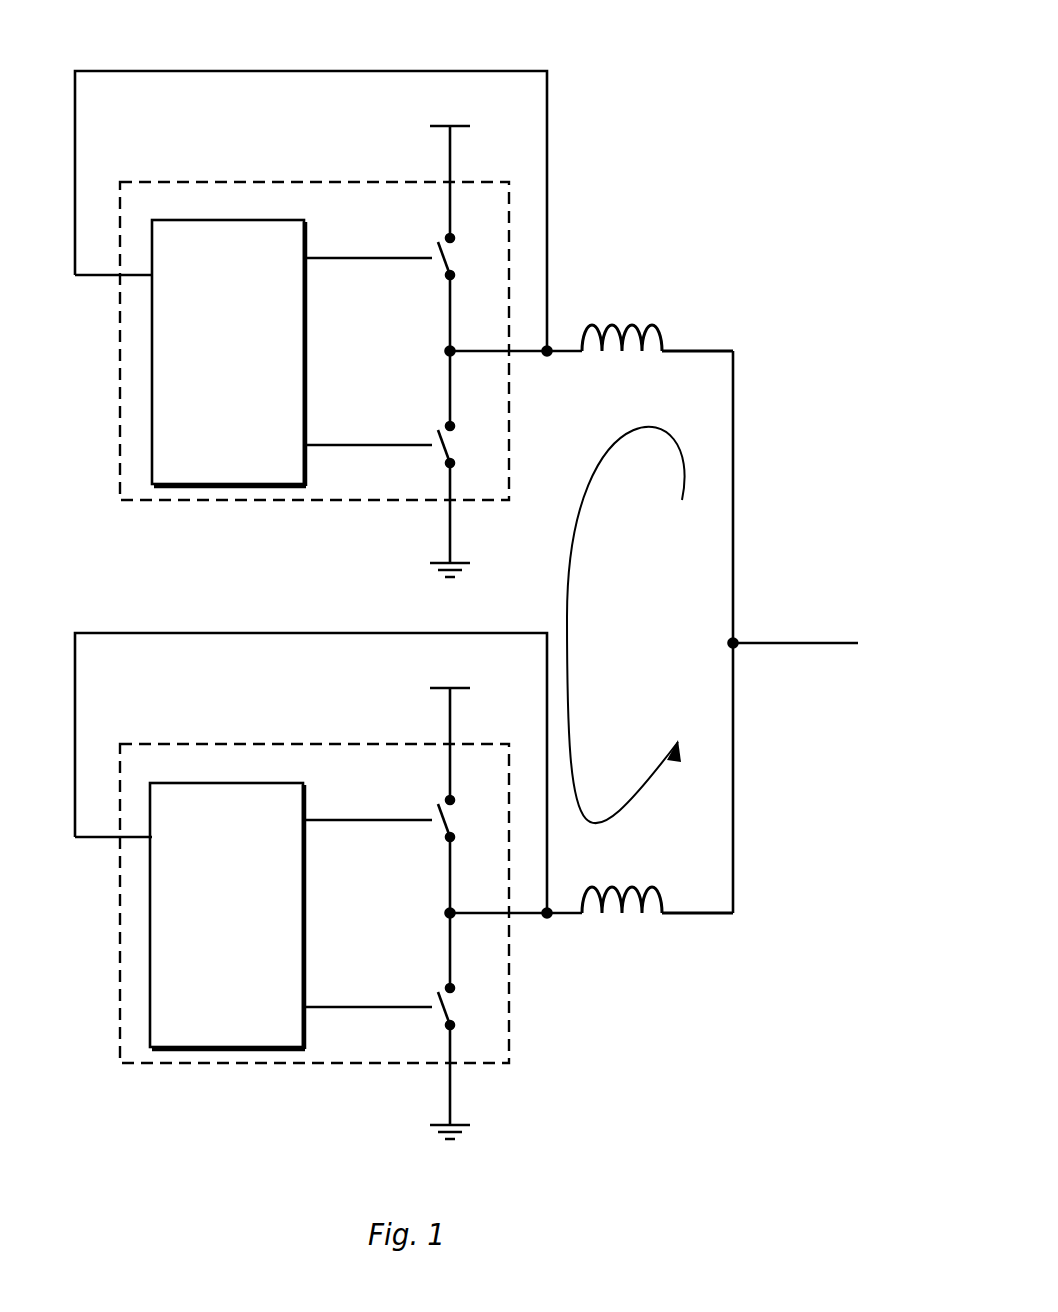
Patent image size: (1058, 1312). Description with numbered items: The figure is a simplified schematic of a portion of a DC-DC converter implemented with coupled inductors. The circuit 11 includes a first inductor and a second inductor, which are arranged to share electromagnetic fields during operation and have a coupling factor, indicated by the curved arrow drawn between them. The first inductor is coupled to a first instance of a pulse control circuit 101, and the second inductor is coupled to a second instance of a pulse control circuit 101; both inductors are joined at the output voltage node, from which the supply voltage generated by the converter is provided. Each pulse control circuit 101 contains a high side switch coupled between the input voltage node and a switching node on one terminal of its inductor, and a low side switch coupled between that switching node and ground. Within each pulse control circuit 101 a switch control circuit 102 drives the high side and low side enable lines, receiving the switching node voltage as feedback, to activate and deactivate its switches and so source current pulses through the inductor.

The circuit 11 is at (677, 37).
The pulse control circuit 101 is at (360, 210).
The switch control circuit 102 is at (212, 390).